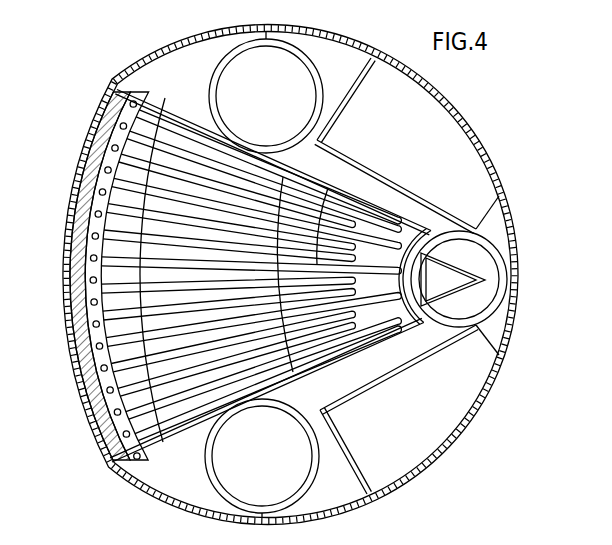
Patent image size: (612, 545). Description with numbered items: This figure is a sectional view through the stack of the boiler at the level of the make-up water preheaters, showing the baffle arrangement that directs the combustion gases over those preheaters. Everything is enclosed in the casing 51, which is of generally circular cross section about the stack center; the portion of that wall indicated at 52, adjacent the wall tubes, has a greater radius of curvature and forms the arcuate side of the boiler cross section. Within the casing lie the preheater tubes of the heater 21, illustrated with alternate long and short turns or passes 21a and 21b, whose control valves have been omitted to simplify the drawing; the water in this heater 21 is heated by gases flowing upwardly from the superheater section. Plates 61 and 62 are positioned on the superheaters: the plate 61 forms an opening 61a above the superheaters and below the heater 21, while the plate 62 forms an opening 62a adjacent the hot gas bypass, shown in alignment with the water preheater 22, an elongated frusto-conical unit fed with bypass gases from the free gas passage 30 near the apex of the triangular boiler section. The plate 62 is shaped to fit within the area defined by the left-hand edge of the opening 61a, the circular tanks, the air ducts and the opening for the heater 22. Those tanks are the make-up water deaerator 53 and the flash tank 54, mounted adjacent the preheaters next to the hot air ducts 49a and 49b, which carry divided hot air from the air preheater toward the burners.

The casing 51 is at (339, 41).
The wall portion of greater radius of curvature 52 is at (100, 123).
The make-up water deaerator 53 is at (207, 444).
The flash tank 54 is at (210, 78).
The baffle plate 61 is at (160, 141).
The opening 61a is at (140, 183).
The preheater (heater) 21 is at (120, 285).
The long turns or passes 21a is at (284, 181).
The short turns or passes 21b is at (327, 194).
The baffle plate 62 is at (393, 201).
The opening 62a is at (478, 254).
The water preheater 22 is at (504, 261).
The air duct 49a is at (455, 399).
The air duct 49b is at (441, 128).
The free gas passage 30 is at (452, 284).